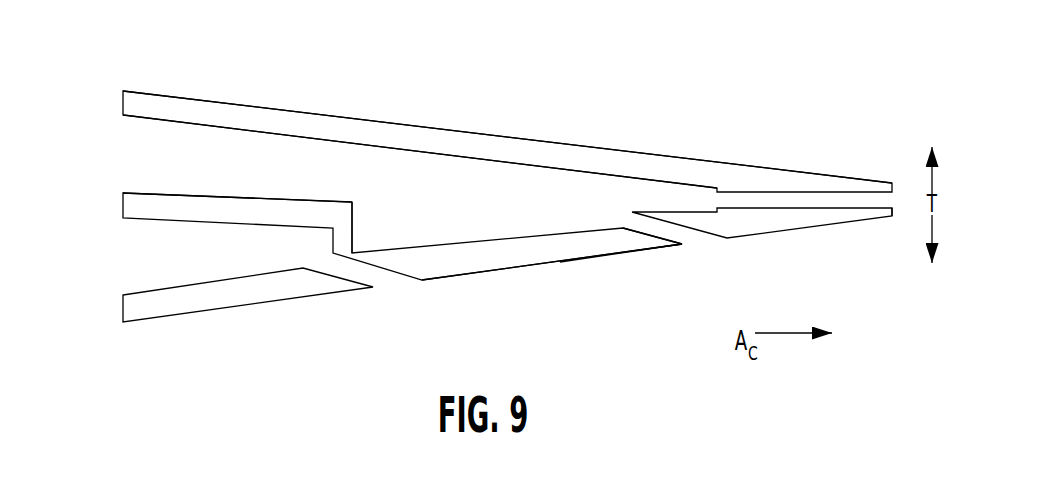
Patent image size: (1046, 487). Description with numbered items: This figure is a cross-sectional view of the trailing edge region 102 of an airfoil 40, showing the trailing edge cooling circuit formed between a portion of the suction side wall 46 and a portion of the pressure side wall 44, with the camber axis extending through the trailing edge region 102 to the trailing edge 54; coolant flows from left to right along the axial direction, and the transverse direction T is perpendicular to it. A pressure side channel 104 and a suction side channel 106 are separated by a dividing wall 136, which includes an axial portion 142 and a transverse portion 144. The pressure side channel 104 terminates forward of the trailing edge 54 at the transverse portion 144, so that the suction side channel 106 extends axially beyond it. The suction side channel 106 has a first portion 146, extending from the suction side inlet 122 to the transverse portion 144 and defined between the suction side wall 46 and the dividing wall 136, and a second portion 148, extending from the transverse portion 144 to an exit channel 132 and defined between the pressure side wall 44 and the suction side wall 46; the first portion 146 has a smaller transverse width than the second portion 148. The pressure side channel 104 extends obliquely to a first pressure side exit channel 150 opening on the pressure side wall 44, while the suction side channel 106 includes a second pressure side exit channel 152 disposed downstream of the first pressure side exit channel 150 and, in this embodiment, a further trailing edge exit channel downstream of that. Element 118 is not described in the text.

The airfoil 40 is at (707, 86).
The trailing edge region 102 is at (750, 136).
The suction side wall 46 is at (485, 133).
The suction side channel 106 is at (378, 165).
The second portion 148 is at (492, 205).
The pressure side channel 104 is at (203, 263).
The dividing wall 136 is at (192, 198).
The axial portion 142 is at (260, 200).
The first portion 146 is at (162, 151).
The suction side inlet 122 is at (112, 152).
The transverse portion 144 is at (345, 231).
The third electrode 118 is at (112, 270).
The first pressure side exit channel 150 is at (346, 280).
The pressure side wall 44 is at (518, 268).
The second pressure side exit channel 152 is at (659, 241).
The exit channel 132 is at (806, 211).
The trailing edge 54 is at (894, 217).